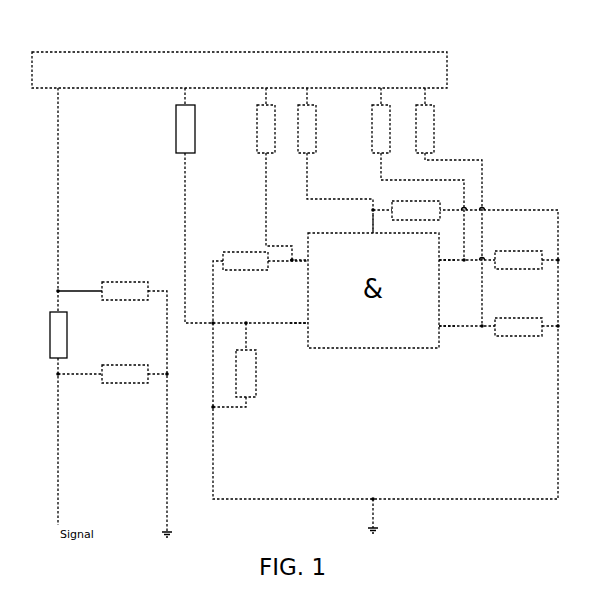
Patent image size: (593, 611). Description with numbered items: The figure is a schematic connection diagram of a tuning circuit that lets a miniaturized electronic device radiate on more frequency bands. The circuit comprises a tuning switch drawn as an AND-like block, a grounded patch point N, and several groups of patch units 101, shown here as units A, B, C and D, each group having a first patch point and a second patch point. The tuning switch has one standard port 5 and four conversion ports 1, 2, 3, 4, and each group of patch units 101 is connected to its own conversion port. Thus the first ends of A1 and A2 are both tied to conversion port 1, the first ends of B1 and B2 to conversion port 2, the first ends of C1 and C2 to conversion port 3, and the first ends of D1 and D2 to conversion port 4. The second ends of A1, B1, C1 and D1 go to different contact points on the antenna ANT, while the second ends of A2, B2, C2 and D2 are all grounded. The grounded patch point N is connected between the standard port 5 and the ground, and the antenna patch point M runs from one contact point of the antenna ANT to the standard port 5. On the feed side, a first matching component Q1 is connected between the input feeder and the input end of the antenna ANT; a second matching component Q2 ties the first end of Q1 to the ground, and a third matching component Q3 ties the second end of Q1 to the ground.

The patch units 101 is at (137, 251).
The conversion port 1 is at (304, 324).
The conversion port 2 is at (304, 260).
The conversion port 3 is at (443, 260).
The conversion port 4 is at (443, 324).
The standard port 5 is at (373, 232).
The antenna ANT is at (239, 70).
The first patch point of unit A A1 is at (185, 129).
The second patch point of unit A A2 is at (241, 349).
The first patch point of unit B B1 is at (266, 129).
The second patch point of unit B B2 is at (245, 261).
The antenna patch point M is at (307, 129).
The grounded patch point N is at (416, 210).
The first patch point of unit C C1 is at (381, 129).
The second patch point of unit C C2 is at (518, 260).
The first patch point of unit D D1 is at (425, 129).
The second patch point of unit D D2 is at (518, 327).
The first matching component Q1 is at (58, 335).
The second matching component Q2 is at (125, 291).
The third matching component Q3 is at (125, 374).